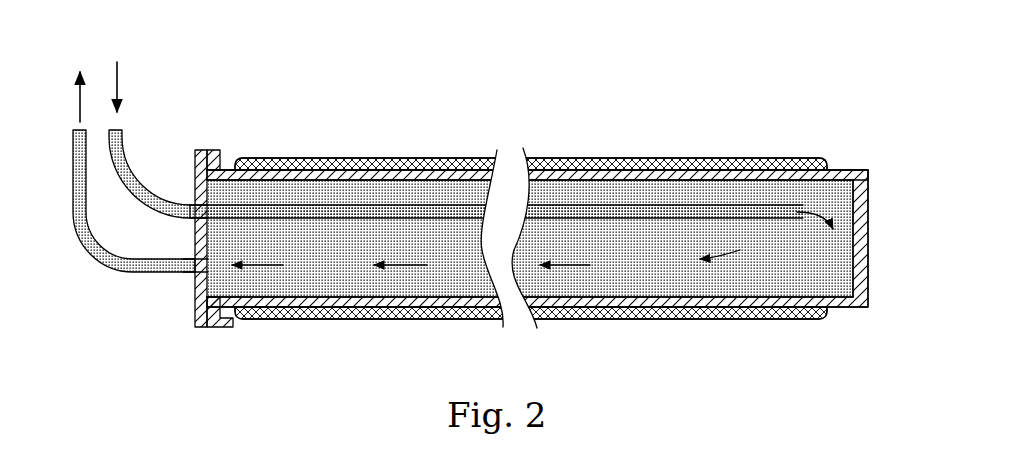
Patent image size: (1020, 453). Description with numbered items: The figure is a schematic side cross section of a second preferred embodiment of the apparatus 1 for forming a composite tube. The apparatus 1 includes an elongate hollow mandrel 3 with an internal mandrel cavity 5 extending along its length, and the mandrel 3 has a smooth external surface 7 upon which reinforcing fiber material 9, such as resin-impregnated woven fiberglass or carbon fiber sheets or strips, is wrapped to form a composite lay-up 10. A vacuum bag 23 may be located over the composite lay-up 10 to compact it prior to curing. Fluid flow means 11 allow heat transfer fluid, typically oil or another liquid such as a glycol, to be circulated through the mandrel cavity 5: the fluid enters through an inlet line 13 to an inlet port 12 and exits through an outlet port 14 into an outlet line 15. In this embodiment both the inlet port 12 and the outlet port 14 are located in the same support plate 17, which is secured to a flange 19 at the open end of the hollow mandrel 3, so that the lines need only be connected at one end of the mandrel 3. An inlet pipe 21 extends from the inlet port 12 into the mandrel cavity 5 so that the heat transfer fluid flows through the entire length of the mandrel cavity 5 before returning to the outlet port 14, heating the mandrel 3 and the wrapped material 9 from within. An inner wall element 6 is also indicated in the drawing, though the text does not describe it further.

The apparatus 1 is at (682, 67).
The elongate hollow mandrel 3 is at (872, 230).
The mandrel cavity 5 is at (622, 262).
The inner wall 6 is at (572, 190).
The external surface 7 is at (843, 166).
The reinforcing fiber material 9 is at (387, 157).
The composite lay-up 10 is at (441, 160).
The fluid flow means 11 is at (191, 229).
The inlet port 12 is at (190, 220).
The inlet line 13 is at (126, 217).
The outlet port 14 is at (207, 312).
The outlet line 15 is at (115, 262).
The support plate 17 is at (195, 163).
The flange 19 is at (212, 150).
The inlet pipe 21 is at (328, 203).
The vacuum bag 23 is at (618, 155).